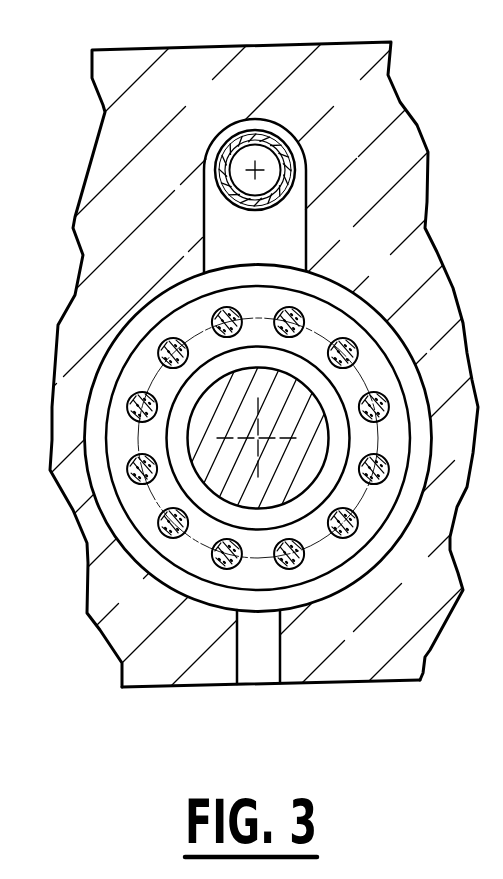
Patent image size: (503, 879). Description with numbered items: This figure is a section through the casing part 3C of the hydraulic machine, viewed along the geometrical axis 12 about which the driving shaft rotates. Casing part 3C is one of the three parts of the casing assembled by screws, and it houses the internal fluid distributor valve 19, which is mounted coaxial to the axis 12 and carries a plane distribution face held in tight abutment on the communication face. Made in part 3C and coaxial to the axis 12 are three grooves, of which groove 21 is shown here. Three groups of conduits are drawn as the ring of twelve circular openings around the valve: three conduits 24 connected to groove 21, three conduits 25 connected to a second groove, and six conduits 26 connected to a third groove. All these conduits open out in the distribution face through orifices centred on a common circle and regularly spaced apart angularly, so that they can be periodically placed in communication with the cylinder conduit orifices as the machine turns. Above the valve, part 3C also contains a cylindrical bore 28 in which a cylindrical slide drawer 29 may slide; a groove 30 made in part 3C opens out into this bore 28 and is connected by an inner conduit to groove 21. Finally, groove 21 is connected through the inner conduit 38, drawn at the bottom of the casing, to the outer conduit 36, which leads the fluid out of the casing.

The geometrical axis 12 is at (261, 433).
The internal fluid distributor valve 19 is at (374, 357).
The groove 21 is at (108, 366).
The conduits 24 is at (215, 309).
The conduits 25 is at (127, 407).
The conduits 26 is at (163, 343).
The cylindrical bore 28 is at (216, 183).
The cylindrical slide drawer 29 is at (290, 166).
The groove 30 is at (220, 150).
The casing part 3C is at (363, 113).
The outer conduit 36 is at (260, 647).
The inner conduit 38 is at (247, 673).